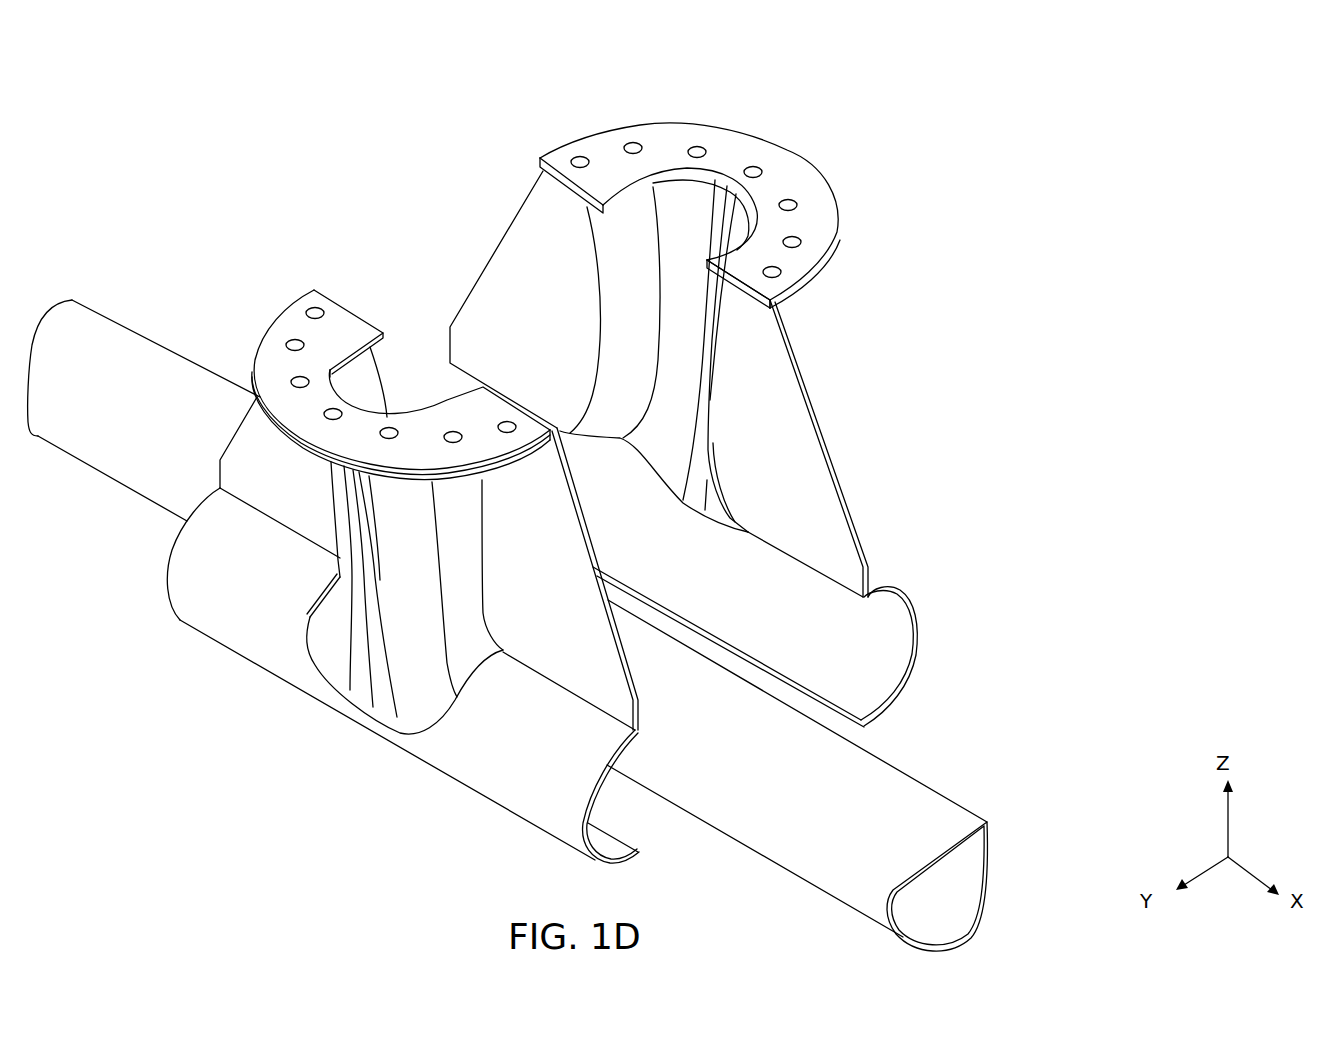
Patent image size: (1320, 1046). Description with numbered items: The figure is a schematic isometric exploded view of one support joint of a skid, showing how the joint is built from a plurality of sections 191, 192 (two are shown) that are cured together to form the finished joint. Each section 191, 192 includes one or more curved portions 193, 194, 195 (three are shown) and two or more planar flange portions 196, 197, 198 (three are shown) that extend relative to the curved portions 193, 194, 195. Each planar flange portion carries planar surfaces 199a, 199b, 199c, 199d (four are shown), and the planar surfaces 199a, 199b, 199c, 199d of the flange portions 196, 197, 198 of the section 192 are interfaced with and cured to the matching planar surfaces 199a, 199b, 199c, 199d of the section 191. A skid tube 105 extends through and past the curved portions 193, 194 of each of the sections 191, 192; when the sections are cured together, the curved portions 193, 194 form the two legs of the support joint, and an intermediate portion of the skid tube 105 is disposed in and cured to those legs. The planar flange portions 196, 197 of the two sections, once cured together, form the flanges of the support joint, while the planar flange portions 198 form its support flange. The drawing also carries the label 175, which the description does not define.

The skid tube 105 is at (917, 777).
The saddle assembly 175 is at (783, 394).
The section 191 is at (407, 674).
The section 192 is at (843, 418).
The curved portion 193 is at (525, 767).
The curved portion 194 is at (233, 600).
The curved portion 195 is at (400, 517).
The planar flange portion 196 is at (504, 442).
The planar flange portion 197 is at (263, 435).
The planar flange portion 198 is at (265, 352).
The planar surface 199a is at (783, 470).
The planar surface 199b is at (520, 233).
The planar surface 199c is at (826, 314).
The planar surface 199d is at (538, 163).